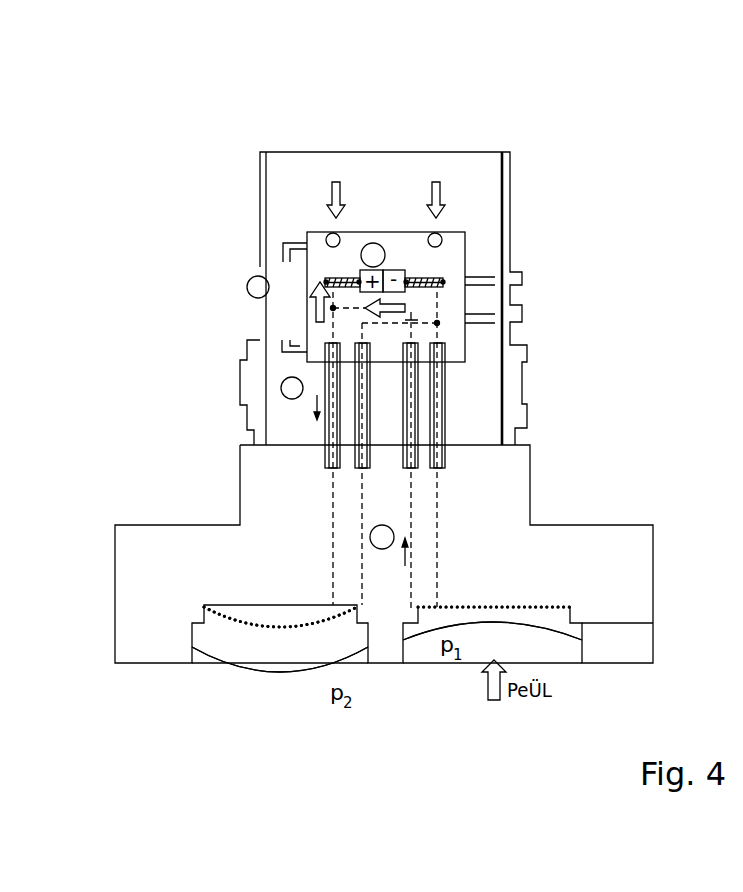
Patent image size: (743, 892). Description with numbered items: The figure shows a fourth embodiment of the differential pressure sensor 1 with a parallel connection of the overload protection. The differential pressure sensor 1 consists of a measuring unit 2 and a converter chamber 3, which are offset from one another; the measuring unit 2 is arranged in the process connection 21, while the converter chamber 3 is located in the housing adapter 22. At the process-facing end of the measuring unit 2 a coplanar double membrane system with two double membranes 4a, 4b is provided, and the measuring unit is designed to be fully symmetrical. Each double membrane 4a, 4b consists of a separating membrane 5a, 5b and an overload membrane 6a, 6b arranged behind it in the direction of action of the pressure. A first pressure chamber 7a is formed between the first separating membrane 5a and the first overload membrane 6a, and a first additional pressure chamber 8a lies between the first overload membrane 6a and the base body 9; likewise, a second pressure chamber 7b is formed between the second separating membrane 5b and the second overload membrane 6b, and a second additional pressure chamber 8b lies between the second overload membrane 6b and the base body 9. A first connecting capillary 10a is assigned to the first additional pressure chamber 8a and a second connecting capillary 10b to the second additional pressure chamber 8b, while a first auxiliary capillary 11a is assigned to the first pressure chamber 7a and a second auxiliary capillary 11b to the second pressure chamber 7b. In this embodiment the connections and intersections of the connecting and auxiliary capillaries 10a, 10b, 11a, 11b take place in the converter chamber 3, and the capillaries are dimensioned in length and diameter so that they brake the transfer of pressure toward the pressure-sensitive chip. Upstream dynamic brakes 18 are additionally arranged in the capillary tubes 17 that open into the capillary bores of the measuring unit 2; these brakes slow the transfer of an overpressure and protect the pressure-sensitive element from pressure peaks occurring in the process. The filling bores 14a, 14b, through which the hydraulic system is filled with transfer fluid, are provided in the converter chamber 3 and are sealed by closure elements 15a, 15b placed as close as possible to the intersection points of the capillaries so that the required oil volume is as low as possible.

The housing adapter 22 is at (505, 187).
The process connection 21 is at (640, 597).
The first closure element 15a is at (340, 254).
The second closure element 15b is at (438, 236).
The first filling bore 14a is at (333, 254).
The second filling bore 14b is at (445, 284).
The upstream dynamic brake 18 is at (423, 276).
The capillary tube 17 is at (415, 418).
The first connecting capillary 10a is at (362, 496).
The second connecting capillary 10b is at (437, 497).
The first auxiliary capillary 11a is at (333, 525).
The second auxiliary capillary 11b is at (411, 527).
The first overload membrane 6a is at (226, 615).
The second overload membrane 6b is at (518, 606).
The first additional pressure chamber 8a is at (273, 624).
The second additional pressure chamber 8b is at (546, 606).
The first pressure chamber 7a is at (222, 634).
The second pressure chamber 7b is at (555, 620).
The first separating membrane 5a is at (258, 672).
The second separating membrane 5b is at (480, 624).
The first double membrane 4a is at (303, 682).
The second double membrane 4b is at (425, 692).
The base body 9 is at (621, 627).
The differential pressure sensor 1 is at (387, 554).
The measuring unit 2 is at (393, 255).
The converter chamber 3 is at (283, 354).